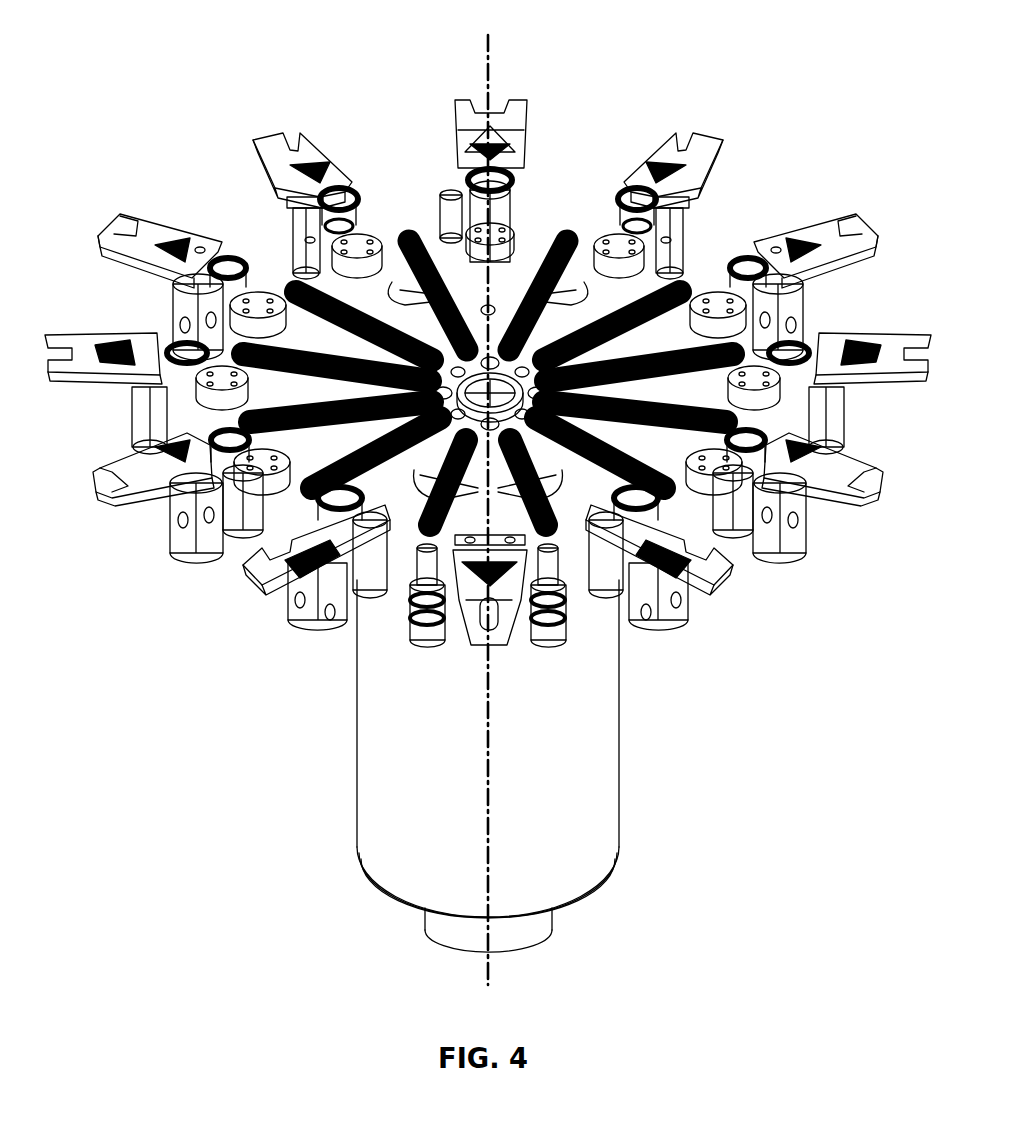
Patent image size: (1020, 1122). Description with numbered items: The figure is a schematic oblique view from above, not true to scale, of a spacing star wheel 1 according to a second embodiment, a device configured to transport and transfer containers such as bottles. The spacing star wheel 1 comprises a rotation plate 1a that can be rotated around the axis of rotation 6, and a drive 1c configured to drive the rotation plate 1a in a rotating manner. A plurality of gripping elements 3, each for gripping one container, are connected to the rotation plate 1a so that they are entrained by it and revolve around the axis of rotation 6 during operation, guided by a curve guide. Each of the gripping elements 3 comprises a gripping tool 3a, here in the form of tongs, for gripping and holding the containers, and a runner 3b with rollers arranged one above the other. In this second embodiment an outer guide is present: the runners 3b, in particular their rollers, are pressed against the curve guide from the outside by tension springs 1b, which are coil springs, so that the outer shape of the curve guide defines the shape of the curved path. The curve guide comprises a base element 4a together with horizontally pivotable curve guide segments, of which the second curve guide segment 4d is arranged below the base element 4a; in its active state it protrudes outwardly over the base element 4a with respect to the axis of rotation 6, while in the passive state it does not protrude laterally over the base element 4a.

The spacing star wheel 1 is at (561, 99).
The rotation plate 1a is at (462, 288).
The tension springs 1b is at (540, 236).
The drive 1c is at (530, 935).
The gripping elements 3 is at (172, 287).
The gripping tools 3a is at (160, 251).
The runners 3b is at (198, 317).
The base element 4a is at (402, 575).
The second curve guide segment 4d is at (536, 592).
The axis of rotation 6 is at (488, 48).